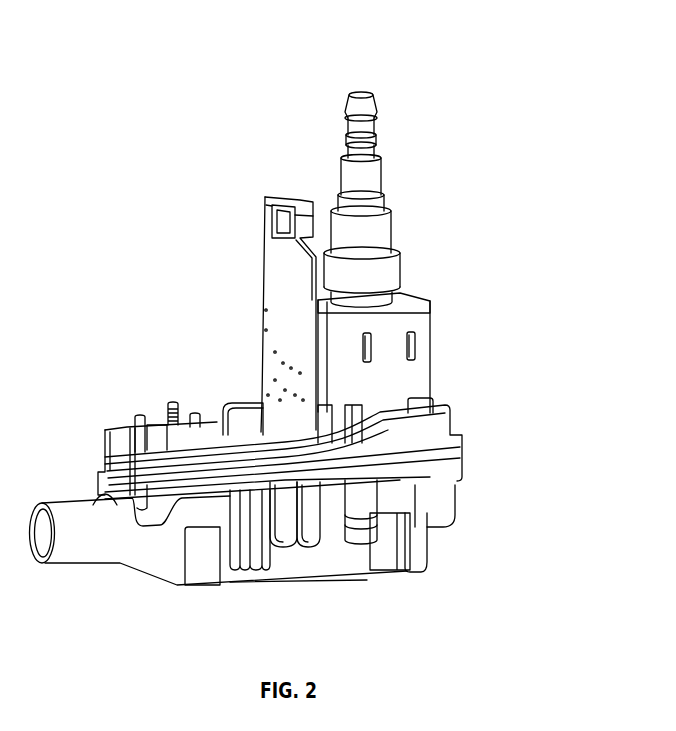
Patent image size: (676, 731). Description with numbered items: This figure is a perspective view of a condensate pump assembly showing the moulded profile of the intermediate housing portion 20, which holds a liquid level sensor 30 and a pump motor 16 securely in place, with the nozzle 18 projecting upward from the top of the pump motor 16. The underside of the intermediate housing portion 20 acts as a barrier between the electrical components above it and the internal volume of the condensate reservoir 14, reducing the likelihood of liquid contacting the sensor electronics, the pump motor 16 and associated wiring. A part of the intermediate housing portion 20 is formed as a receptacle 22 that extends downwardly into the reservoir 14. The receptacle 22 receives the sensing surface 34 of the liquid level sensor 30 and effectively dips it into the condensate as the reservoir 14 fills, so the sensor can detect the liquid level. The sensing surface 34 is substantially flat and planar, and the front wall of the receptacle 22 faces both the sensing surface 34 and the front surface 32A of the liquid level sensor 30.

The condensate reservoir 14 is at (415, 552).
The pump motor 16 is at (440, 303).
The nozzle / barbed fitting 18 is at (355, 93).
The intermediate housing portion 20 is at (460, 450).
The receptacle 22 is at (309, 541).
The liquid level sensor 30 is at (255, 267).
The front surface 32A is at (273, 332).
The sensing surface 34 is at (285, 515).